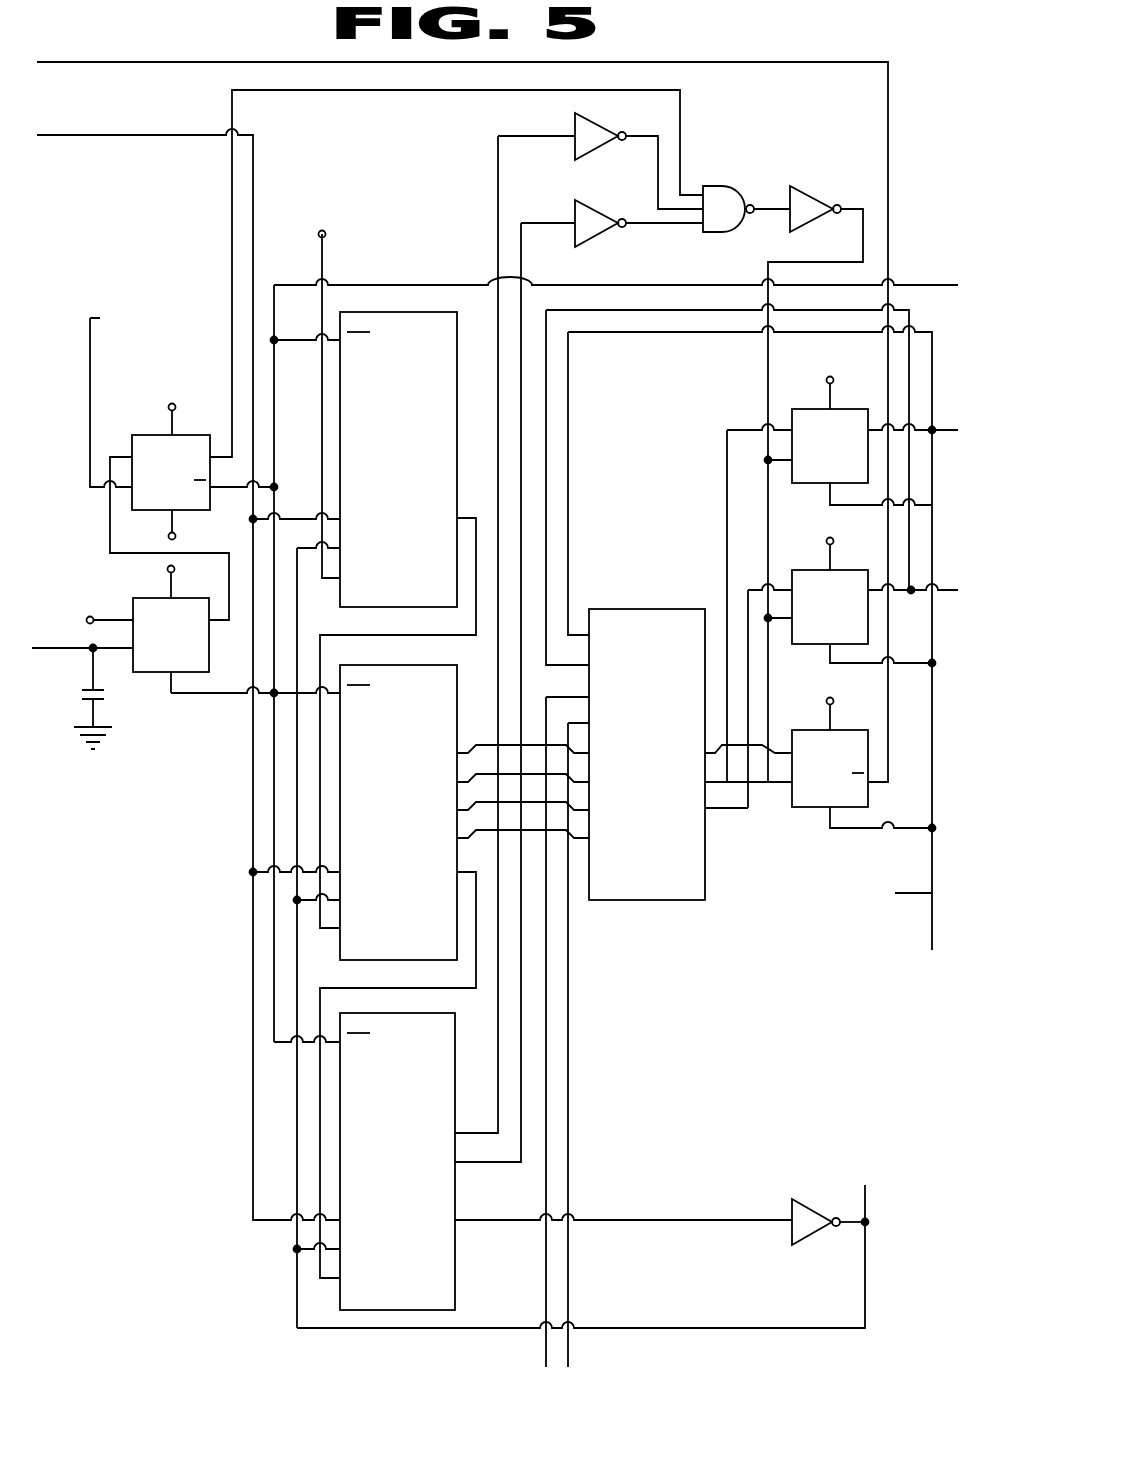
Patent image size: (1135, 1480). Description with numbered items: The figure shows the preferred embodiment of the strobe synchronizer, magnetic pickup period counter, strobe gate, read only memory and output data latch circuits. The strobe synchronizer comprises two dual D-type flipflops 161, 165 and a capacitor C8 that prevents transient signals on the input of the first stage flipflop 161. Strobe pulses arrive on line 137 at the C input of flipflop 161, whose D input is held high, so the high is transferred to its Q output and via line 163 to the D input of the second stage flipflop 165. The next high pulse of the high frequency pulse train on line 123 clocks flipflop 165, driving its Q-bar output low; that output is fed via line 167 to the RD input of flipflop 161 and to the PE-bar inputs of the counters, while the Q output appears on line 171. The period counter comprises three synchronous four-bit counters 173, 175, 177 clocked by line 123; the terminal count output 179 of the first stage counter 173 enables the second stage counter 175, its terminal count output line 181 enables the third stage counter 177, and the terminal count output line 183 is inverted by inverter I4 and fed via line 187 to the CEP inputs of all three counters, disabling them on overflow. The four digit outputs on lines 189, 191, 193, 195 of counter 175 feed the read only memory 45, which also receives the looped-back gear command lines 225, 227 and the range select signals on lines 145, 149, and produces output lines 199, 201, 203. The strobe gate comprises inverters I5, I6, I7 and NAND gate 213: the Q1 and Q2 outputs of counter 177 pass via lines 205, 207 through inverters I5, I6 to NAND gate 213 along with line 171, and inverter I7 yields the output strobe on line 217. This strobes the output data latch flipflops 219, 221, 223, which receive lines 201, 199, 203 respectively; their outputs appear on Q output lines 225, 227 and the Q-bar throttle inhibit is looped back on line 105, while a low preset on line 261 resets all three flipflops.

The line 105 is at (105, 60).
The line 123 is at (95, 135).
The line 171 is at (230, 263).
The line 167 is at (274, 462).
The second stage flipflop 165 is at (138, 437).
The first stage flipflop 161 is at (152, 598).
The line 163 is at (232, 610).
The line 137 is at (75, 652).
The capacitor C8 is at (100, 701).
The first stage counter 173 is at (432, 297).
The second stage counter 175 is at (430, 650).
The third stage counter 177 is at (420, 1000).
The terminal count output 179 is at (467, 507).
The terminal count output line 181 is at (472, 862).
The terminal count output line 183 is at (478, 1218).
The line 187 is at (297, 1288).
The digit output line 189 is at (564, 831).
The digit output line 191 is at (564, 803).
The digit output line 193 is at (564, 775).
The digit output line 195 is at (564, 746).
The ROM output line 199 is at (726, 812).
The ROM output line 201 is at (728, 782).
The ROM output line 203 is at (740, 745).
The line 205 is at (535, 138).
The line 207 is at (537, 224).
The NAND gate 213 is at (725, 191).
The line 217 is at (863, 244).
The flipflop 219 is at (797, 410).
The flipflop 221 is at (807, 571).
The third flipflop 223 is at (800, 725).
The Q output line 225 is at (568, 428).
The Q output line 227 is at (546, 400).
The line 261 is at (892, 892).
The read only memory 45 is at (620, 608).
The line 149 is at (548, 1263).
The line 145 is at (568, 1288).
The inverter I4 is at (806, 1205).
The inverter I5 is at (588, 130).
The inverter I6 is at (588, 242).
The inverter I7 is at (800, 203).